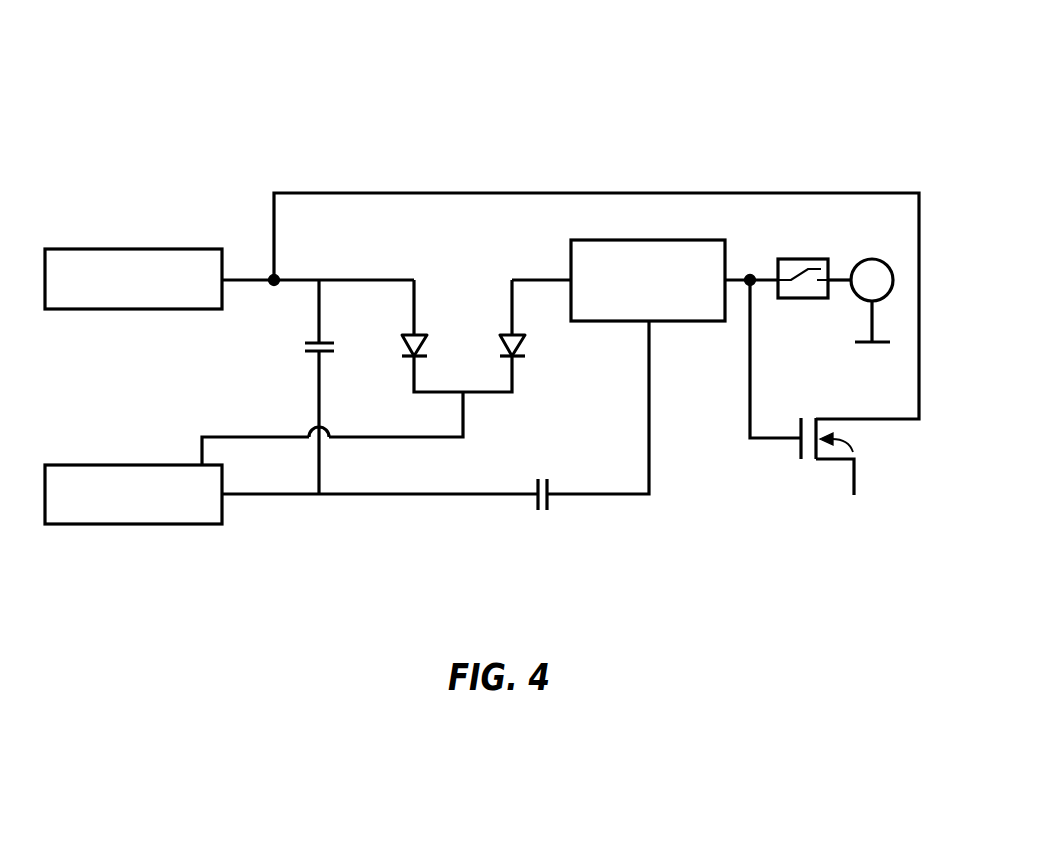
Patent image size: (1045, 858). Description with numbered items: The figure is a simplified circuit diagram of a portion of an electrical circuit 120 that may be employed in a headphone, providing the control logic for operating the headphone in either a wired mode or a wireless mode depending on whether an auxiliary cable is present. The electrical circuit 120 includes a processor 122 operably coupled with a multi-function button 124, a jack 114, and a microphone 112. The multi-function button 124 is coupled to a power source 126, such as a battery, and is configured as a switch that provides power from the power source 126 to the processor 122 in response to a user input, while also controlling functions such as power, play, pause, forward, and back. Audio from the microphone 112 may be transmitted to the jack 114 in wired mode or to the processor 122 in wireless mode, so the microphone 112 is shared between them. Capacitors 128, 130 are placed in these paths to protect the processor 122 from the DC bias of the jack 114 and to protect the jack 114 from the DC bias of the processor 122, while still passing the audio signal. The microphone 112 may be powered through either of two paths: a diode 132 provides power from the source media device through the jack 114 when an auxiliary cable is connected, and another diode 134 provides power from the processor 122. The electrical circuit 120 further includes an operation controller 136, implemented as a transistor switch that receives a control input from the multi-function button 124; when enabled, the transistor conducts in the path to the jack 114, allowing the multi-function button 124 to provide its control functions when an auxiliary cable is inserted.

The microphone 112 is at (85, 465).
The jack 114 is at (100, 249).
The electrical circuit 120 is at (540, 103).
The processor 122 is at (650, 250).
The multi-function button 124 is at (800, 259).
The power source 126 is at (872, 259).
The capacitor 128 is at (312, 351).
The capacitor 130 is at (548, 505).
The diode 132 is at (418, 336).
The diode 134 is at (525, 345).
The operation controller 136 is at (801, 456).